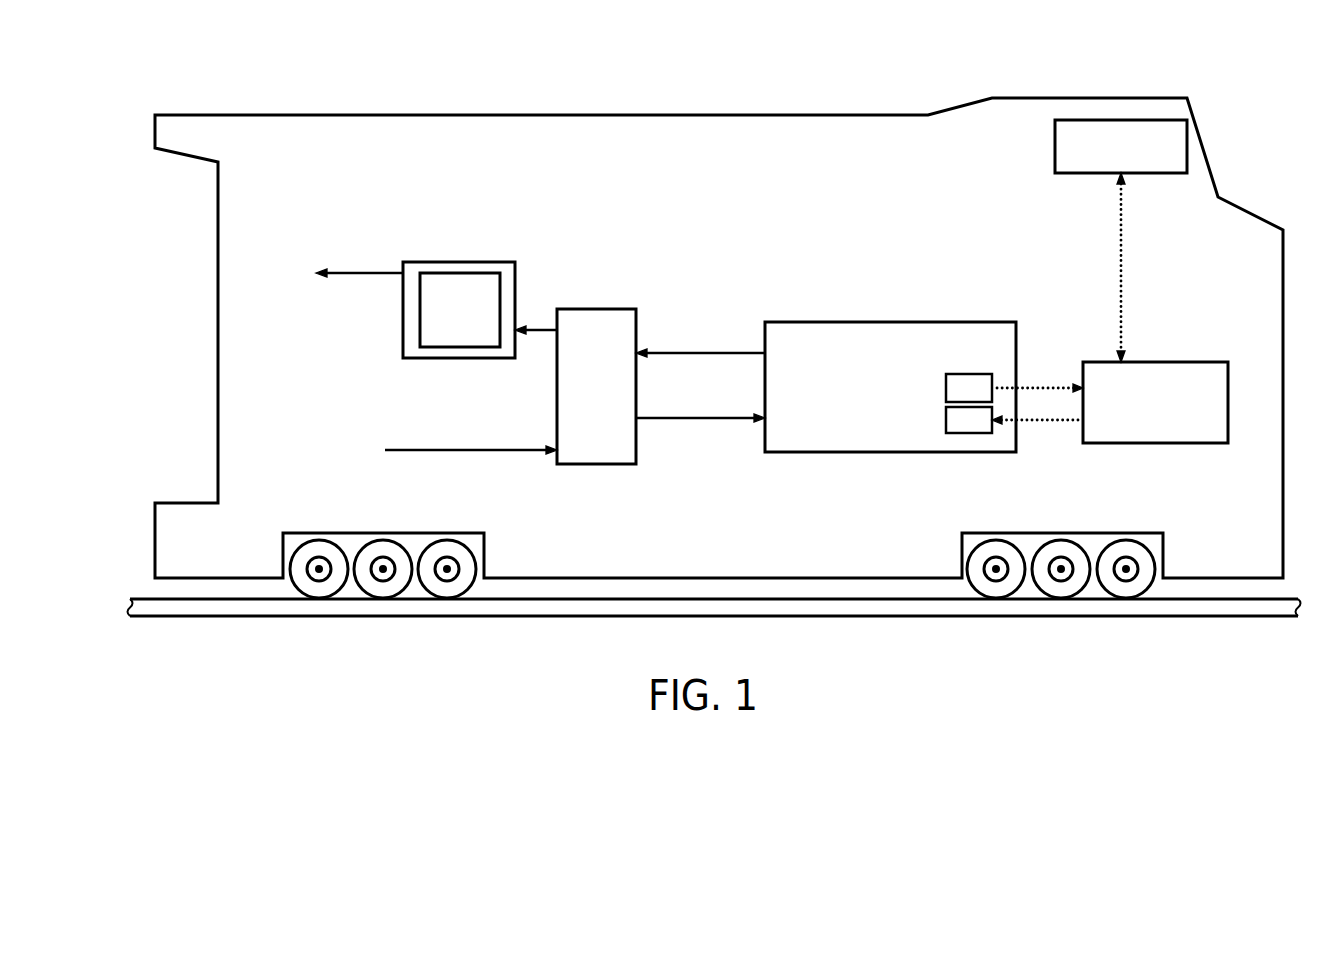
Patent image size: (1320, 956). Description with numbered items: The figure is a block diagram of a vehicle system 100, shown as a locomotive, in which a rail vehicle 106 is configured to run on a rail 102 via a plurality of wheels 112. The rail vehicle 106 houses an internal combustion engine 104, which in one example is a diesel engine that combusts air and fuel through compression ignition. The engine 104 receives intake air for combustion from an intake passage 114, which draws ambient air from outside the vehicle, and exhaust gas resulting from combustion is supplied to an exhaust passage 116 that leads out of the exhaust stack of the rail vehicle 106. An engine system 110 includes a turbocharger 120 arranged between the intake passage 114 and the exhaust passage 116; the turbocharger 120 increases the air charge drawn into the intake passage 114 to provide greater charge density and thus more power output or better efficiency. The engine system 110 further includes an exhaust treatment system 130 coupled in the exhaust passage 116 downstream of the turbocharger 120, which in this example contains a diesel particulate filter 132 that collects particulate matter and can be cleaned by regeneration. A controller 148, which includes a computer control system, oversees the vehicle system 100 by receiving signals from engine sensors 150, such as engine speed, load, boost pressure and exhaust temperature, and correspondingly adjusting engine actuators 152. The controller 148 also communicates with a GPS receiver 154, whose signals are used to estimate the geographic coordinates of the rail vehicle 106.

The vehicle system 100 is at (1131, 58).
The rail 102 is at (1216, 616).
The internal combustion engine 104 is at (874, 408).
The rail vehicle 106 is at (748, 115).
The engine system 110 is at (467, 174).
The wheels 112 is at (477, 552).
The intake passage 114 is at (420, 452).
The exhaust passage 116 is at (340, 275).
The turbocharger 120 is at (581, 408).
The exhaust treatment system 130 is at (481, 262).
The diesel particulate filter 132 is at (444, 319).
The controller 148 is at (1139, 424).
The engine sensors 150 is at (969, 388).
The engine actuators 152 is at (969, 420).
The GPS receiver 154 is at (1105, 156).